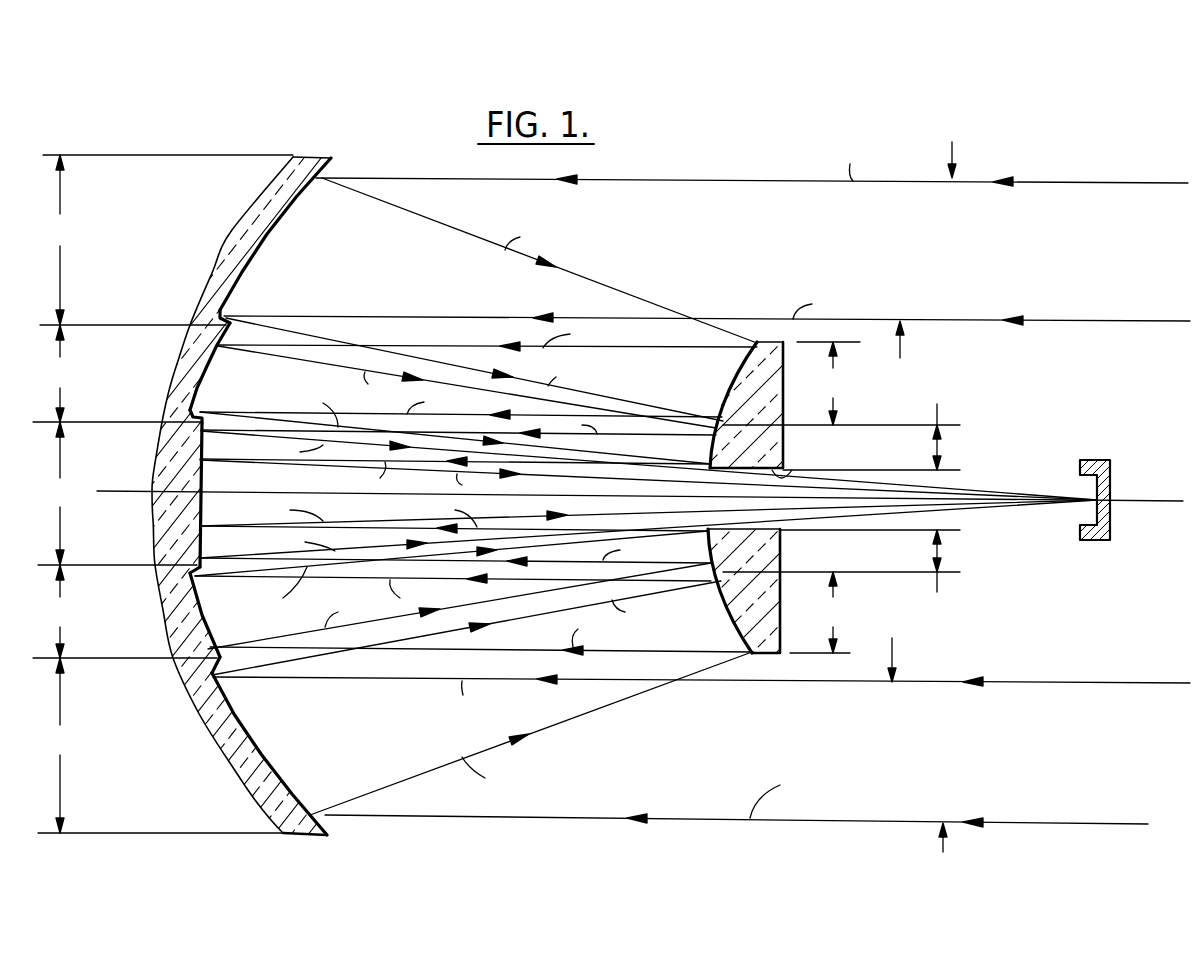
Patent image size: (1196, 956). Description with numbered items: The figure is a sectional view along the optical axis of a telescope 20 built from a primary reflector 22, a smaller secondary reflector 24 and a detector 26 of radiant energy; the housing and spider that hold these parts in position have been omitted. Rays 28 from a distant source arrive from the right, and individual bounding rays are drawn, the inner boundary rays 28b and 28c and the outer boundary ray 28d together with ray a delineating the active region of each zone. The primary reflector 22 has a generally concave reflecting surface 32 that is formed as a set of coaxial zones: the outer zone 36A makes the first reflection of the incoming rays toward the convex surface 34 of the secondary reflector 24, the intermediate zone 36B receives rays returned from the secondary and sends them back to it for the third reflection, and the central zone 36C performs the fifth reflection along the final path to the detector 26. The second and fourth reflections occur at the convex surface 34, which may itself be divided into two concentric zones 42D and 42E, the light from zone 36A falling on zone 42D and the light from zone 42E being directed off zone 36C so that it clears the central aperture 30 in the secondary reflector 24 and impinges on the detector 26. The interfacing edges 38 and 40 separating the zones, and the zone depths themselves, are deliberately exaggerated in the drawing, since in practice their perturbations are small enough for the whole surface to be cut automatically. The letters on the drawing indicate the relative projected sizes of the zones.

The telescope 20 is at (758, 162).
The primary reflector 22 is at (257, 203).
The secondary reflector 24 is at (785, 342).
The detector 26 is at (1092, 541).
The rays 28 is at (1081, 184).
The inner boundary ray b 28b is at (955, 320).
The inner boundary ray c 28c is at (1003, 682).
The outer boundary ray d 28d is at (1030, 822).
The aperture 30 is at (793, 470).
The concave reflecting surface 32 is at (278, 252).
The convex surface 34 is at (720, 378).
The outer zone 36A is at (283, 213).
The intermediate zone 36B is at (212, 367).
The central zone 36C is at (201, 477).
The interfacing edge 38 is at (229, 318).
The interfacing edge 40 is at (204, 413).
The outer zone of secondary reflector 42D is at (733, 367).
The inner zone of secondary reflector 42E is at (711, 456).